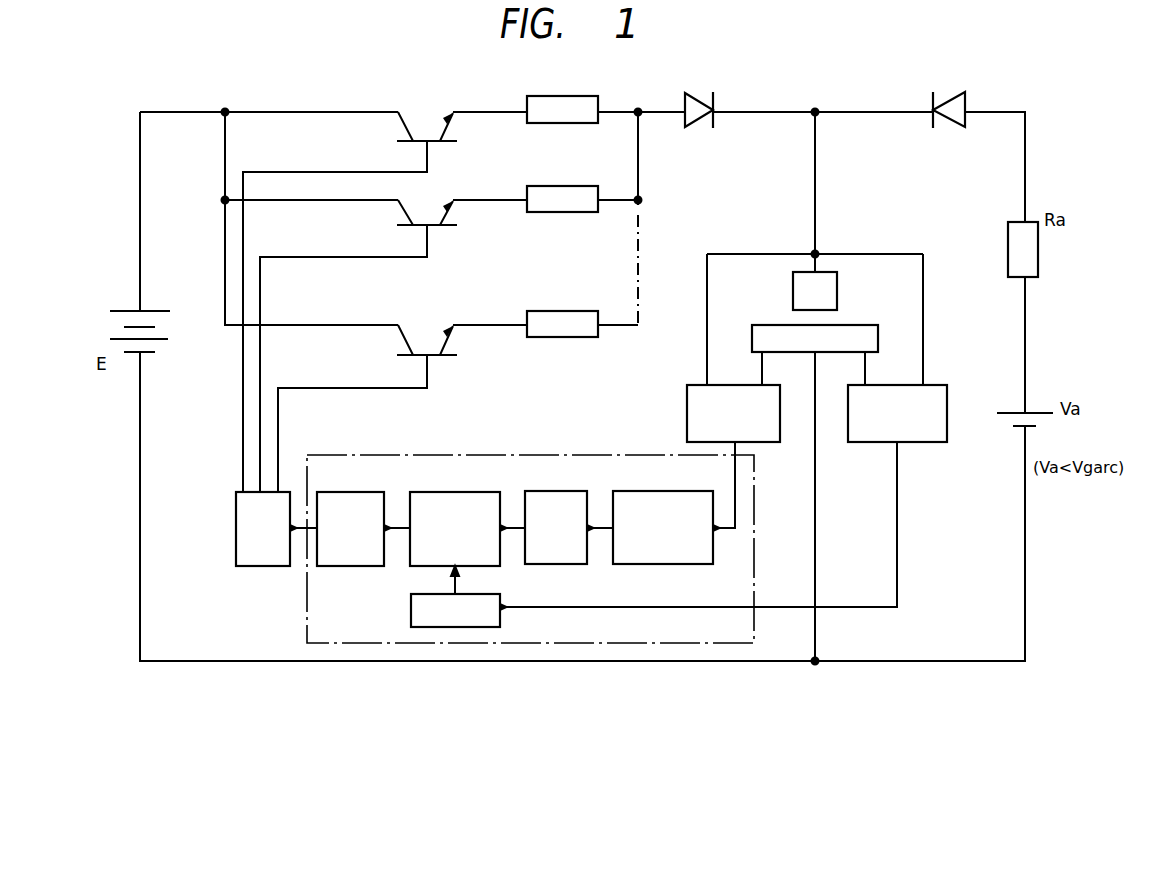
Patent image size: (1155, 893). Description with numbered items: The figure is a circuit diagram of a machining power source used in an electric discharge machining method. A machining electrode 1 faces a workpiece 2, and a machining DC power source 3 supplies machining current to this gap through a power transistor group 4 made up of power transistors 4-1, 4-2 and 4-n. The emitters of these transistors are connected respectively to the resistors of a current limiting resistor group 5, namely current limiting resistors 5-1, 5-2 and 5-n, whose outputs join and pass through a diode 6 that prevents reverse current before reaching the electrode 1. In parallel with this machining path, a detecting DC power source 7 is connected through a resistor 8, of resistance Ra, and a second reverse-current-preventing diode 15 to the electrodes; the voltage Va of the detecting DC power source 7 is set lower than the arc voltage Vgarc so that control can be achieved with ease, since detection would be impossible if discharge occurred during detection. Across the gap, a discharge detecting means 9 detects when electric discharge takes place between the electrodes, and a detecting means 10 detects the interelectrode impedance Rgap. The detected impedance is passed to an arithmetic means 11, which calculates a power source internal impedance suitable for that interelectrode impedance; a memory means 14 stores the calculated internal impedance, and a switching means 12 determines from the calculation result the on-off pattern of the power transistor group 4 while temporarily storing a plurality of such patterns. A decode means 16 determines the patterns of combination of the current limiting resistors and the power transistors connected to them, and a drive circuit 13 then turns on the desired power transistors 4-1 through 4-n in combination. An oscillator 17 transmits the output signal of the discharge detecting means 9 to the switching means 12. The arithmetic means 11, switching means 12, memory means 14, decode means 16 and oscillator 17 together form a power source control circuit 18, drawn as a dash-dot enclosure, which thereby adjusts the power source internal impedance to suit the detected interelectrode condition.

The machining electrode 1 is at (838, 285).
The workpiece 2 is at (879, 336).
The machining DC power source 3 is at (120, 311).
The power transistor group 4 is at (434, 134).
The power transistor 4-1 is at (435, 142).
The power transistor 4-2 is at (435, 226).
The power transistor 4-n is at (435, 359).
The current limiting resistor group 5 is at (578, 96).
The current limiting resistor 5-1 is at (570, 124).
The current limiting resistor 5-2 is at (565, 213).
The current limiting resistor 5-n is at (565, 338).
The diode 6 is at (697, 102).
The detecting DC power source 7 is at (1040, 421).
The resistor 8 is at (1004, 229).
The discharge detecting means 9 is at (935, 385).
The detecting means 10 is at (767, 443).
The arithmetic means 11 is at (680, 490).
The switching means 12 is at (471, 492).
The drive circuit 13 is at (260, 567).
The memory means 14 is at (556, 491).
The diode 15 is at (944, 102).
The decode means 16 is at (354, 492).
The oscillator 17 is at (486, 596).
The power source control circuit 18 is at (302, 609).